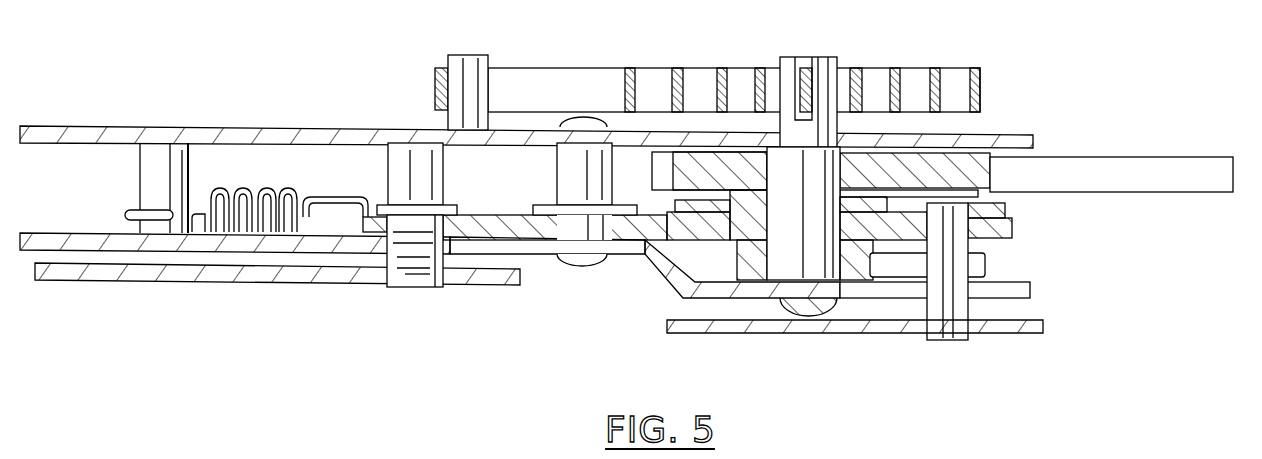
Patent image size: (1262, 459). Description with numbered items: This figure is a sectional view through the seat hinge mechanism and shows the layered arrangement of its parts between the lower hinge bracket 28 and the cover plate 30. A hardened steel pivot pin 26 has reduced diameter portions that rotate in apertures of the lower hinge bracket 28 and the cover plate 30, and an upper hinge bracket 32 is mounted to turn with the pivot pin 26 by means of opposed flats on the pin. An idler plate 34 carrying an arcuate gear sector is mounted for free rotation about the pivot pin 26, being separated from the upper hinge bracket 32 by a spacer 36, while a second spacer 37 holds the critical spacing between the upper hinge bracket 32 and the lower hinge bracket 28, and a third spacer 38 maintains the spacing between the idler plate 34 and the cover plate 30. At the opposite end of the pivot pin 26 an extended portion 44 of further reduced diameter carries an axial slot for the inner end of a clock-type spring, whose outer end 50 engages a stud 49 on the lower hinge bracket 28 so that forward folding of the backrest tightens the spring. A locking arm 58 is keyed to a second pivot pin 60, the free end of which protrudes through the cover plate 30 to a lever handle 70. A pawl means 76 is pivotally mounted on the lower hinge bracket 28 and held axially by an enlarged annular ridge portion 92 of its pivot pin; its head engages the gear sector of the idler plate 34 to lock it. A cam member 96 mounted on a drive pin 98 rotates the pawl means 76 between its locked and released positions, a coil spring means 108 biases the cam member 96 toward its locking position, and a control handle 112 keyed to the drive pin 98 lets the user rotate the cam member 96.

The pivot pin 26 is at (822, 300).
The lower hinge bracket 28 is at (1018, 135).
The cover plate 30 is at (1030, 291).
The upper hinge bracket 32 is at (1133, 165).
The idler plate 34 is at (1005, 230).
The spacer 36 is at (736, 206).
The second spacer 37 is at (770, 152).
The third spacer 38 is at (862, 298).
The extended portion 44 is at (820, 57).
The stud 49 is at (470, 55).
The outer end of the clock-like spring 50 is at (697, 68).
The locking arm 58 is at (983, 265).
The second pivot pin 60 is at (936, 335).
The lever handle 70 is at (1030, 335).
The pawl means 76 is at (627, 234).
The enlarged annular ridge portion 92 is at (540, 204).
The cam member 96 is at (475, 212).
The drive pin 98 is at (410, 278).
The coil spring means 108 is at (260, 186).
The control handle 112 is at (185, 272).